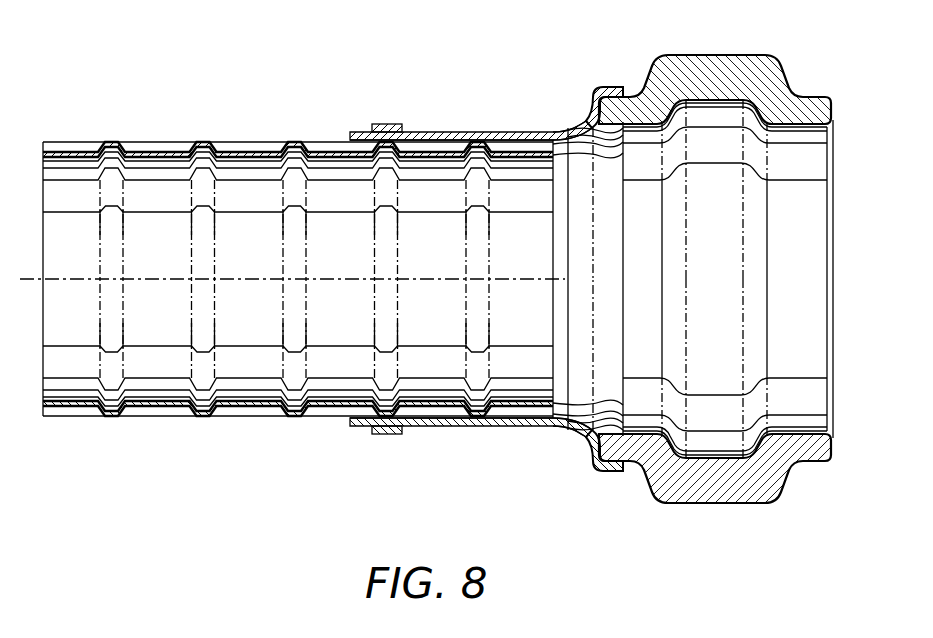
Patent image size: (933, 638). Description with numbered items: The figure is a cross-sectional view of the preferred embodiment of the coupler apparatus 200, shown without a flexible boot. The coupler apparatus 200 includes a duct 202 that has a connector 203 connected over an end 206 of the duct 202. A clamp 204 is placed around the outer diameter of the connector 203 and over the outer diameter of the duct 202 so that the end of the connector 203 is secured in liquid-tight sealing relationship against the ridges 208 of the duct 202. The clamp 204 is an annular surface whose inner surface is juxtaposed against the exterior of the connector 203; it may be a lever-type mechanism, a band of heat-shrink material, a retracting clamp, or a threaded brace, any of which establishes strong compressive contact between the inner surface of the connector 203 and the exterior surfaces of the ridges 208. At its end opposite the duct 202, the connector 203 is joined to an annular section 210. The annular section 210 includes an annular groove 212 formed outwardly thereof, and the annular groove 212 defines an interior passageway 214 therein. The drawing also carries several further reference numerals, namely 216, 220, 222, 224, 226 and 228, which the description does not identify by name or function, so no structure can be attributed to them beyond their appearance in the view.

The coupler apparatus 200 is at (247, 78).
The duct 202 is at (165, 417).
The connector 203 is at (493, 427).
The clamp 204 is at (387, 432).
The end 206 is at (407, 398).
The ridges 208 is at (205, 141).
The annular section 210 is at (465, 132).
The annular groove 212 is at (590, 105).
The interior passageway 214 is at (603, 88).
The transition portion 216 is at (538, 430).
The tube wall 220 is at (320, 412).
The collar 222 is at (656, 47).
The sleeve end portion 224 is at (647, 125).
The collar shoulder 226 is at (820, 103).
The collar rib 228 is at (717, 55).